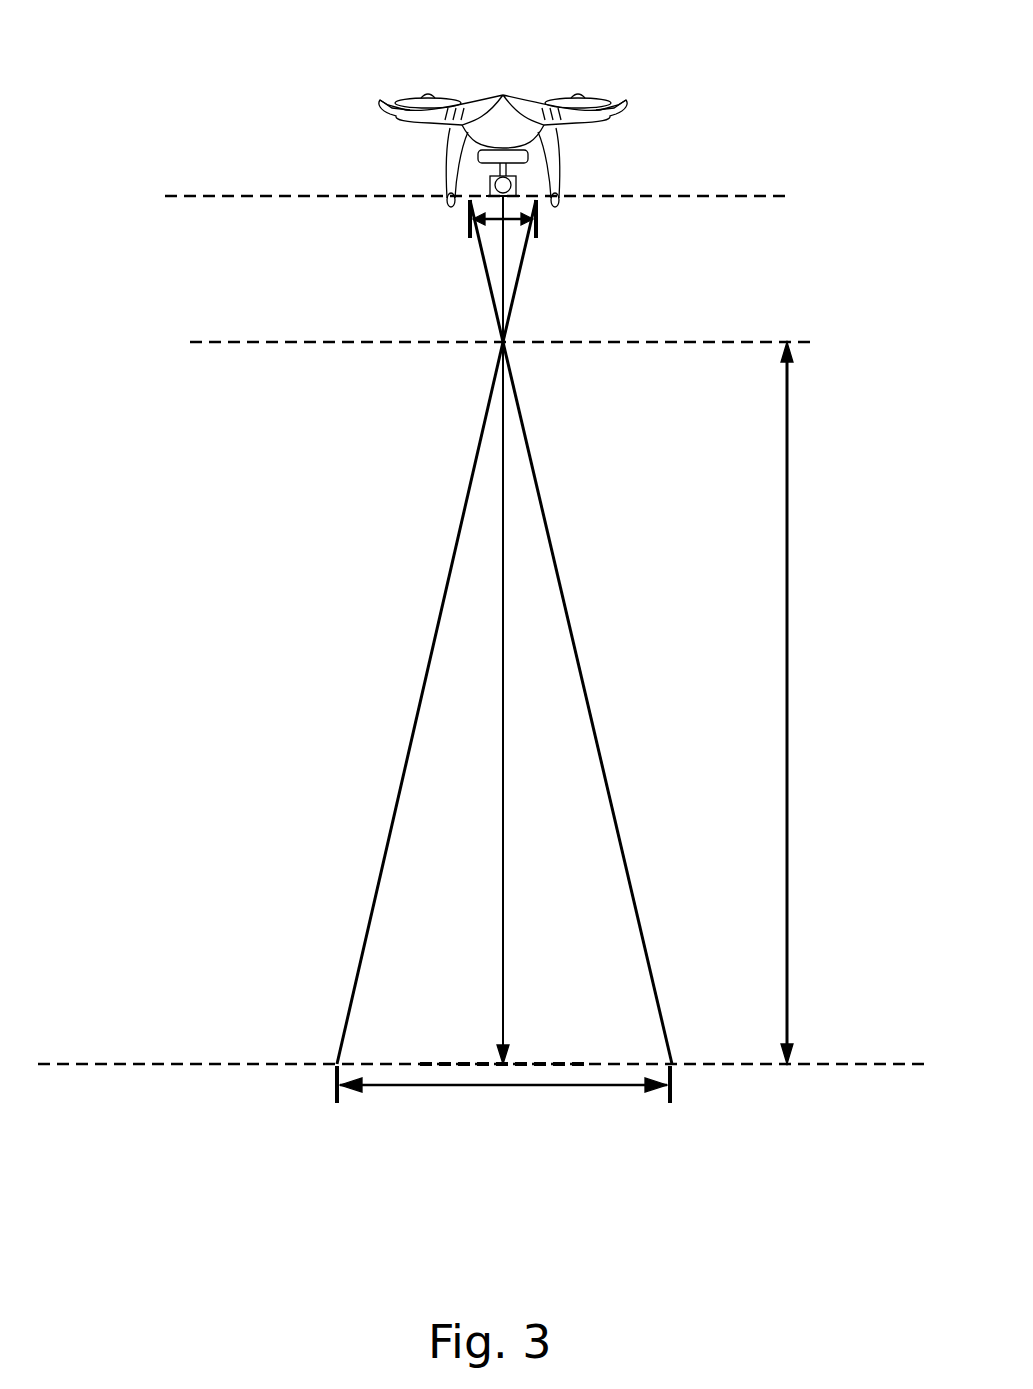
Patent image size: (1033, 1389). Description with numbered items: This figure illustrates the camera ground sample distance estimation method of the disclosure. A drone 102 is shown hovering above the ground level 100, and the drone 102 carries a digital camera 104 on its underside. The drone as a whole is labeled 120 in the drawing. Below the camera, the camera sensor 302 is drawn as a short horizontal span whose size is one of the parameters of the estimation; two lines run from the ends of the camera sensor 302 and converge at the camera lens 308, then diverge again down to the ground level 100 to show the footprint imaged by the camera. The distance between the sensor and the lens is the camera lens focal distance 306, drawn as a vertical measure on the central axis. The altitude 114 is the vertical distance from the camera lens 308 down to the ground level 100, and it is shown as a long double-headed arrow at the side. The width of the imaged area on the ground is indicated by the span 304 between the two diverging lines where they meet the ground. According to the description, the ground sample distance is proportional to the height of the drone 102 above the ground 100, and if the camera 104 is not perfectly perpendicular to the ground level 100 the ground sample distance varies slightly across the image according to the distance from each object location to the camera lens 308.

The ground level 100 is at (138, 1063).
The drone 102 is at (503, 105).
The digital camera 104 is at (467, 207).
The altitude 114 is at (787, 532).
The unmanned aerial vehicle 120 is at (438, 104).
The camera sensor 302 is at (537, 232).
The ground footprint width 304 is at (500, 1088).
The camera lens focal distance 306 is at (503, 253).
The camera lens 308 is at (510, 346).